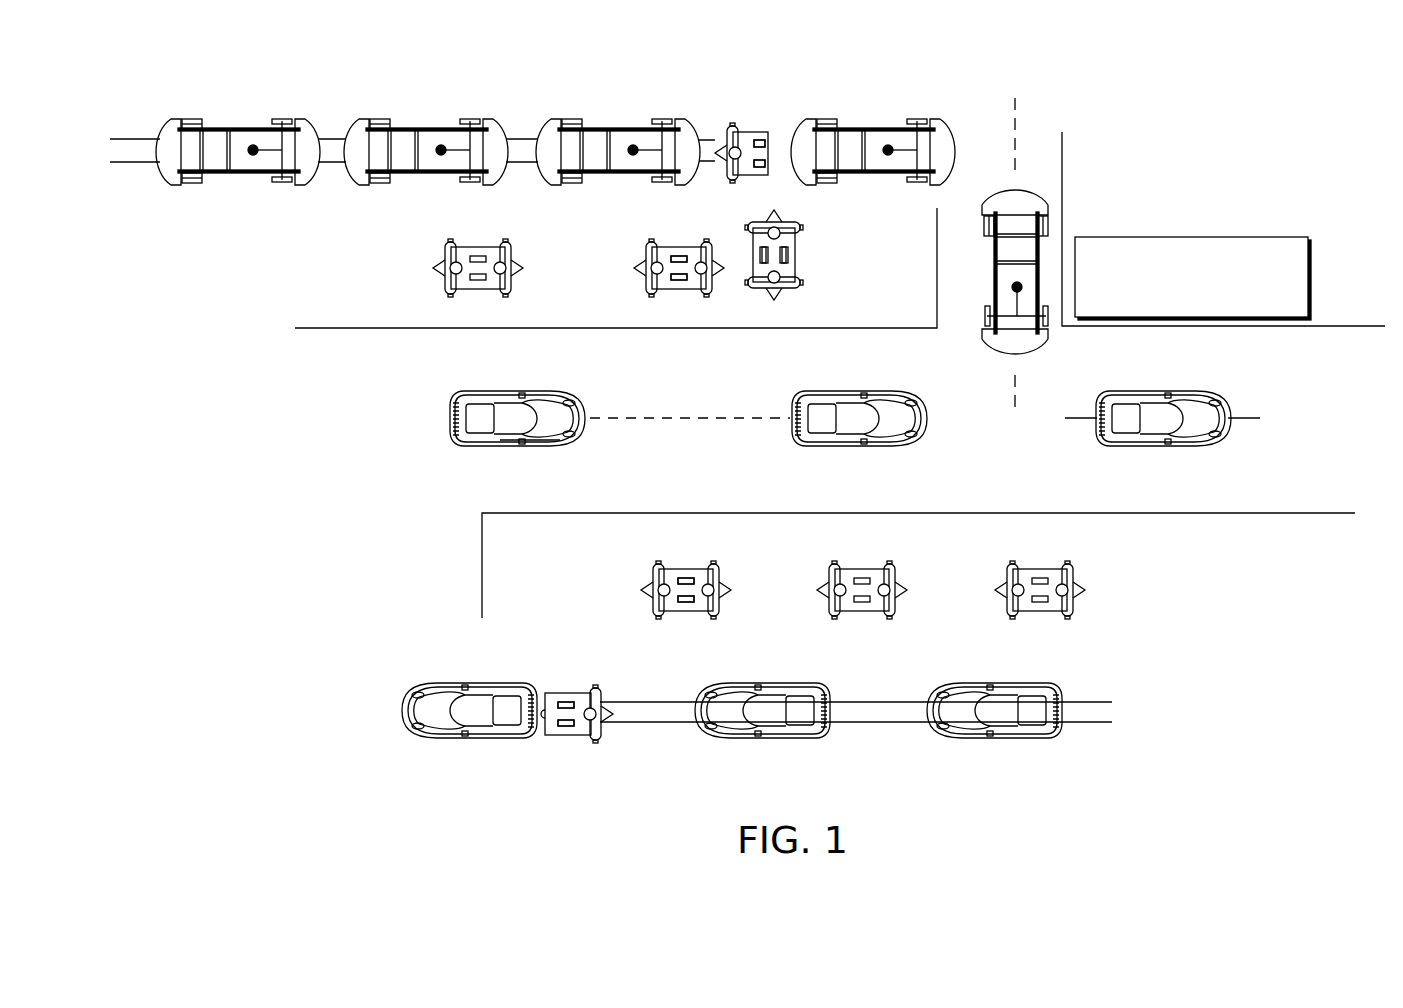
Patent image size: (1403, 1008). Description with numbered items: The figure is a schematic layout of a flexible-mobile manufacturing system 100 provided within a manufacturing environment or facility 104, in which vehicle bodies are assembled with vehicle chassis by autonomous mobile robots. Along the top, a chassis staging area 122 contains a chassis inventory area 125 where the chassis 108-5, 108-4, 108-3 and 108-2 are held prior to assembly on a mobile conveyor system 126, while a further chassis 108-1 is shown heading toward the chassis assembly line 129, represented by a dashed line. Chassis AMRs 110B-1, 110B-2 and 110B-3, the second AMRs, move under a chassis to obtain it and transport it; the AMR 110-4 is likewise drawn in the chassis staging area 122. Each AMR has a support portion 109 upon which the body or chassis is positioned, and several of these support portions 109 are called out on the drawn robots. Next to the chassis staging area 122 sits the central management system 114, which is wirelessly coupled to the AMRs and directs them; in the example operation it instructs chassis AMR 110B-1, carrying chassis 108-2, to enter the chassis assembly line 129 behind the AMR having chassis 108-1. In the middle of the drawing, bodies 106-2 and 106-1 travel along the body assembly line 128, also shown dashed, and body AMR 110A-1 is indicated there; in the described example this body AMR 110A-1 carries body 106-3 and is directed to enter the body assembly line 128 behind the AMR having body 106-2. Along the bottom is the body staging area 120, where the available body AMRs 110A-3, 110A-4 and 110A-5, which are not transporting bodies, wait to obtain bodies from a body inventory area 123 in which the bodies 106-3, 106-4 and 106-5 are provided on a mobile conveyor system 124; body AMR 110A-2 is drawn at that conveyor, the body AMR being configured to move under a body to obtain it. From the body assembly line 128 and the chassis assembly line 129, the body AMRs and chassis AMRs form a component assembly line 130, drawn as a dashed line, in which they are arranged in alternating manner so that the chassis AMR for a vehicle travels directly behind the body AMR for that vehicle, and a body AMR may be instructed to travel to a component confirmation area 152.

The flexible-mobile manufacturing system 100 is at (280, 613).
The manufacturing environment or facility 104 is at (1252, 154).
The body 106-1 is at (840, 391).
The body 106-2 is at (510, 391).
The body 106-3 is at (468, 739).
The body 106-4 is at (776, 739).
The body 106-5 is at (1010, 739).
The chassis 108-1 is at (1050, 229).
The chassis 108-2 is at (872, 128).
The chassis 108-3 is at (617, 128).
The chassis 108-4 is at (425, 128).
The chassis 108-5 is at (237, 128).
The support portion 109 is at (564, 692).
The autonomous mobile robot 110-4 is at (468, 247).
The body AMR 110A-1 is at (530, 446).
The body AMR 110A-2 is at (573, 736).
The body AMR 110A-3 is at (652, 583).
The body AMR 110A-4 is at (862, 613).
The body AMR 110A-5 is at (1040, 613).
The chassis AMR 110B-1 is at (748, 132).
The chassis AMR 110B-2 is at (800, 256).
The chassis AMR 110B-3 is at (648, 277).
The central management system 114 is at (1253, 237).
The body staging area 120 is at (1178, 571).
The chassis staging area 122 is at (400, 294).
The body inventory area 123 is at (1080, 752).
The mobile conveyor system 124 is at (888, 744).
The chassis inventory area 125 is at (245, 207).
The mobile conveyor system 126 is at (334, 134).
The body assembly line 128 is at (680, 413).
The chassis assembly line 129 is at (1032, 121).
The component assembly line 130 is at (1250, 419).
The component confirmation area 152 is at (1048, 430).